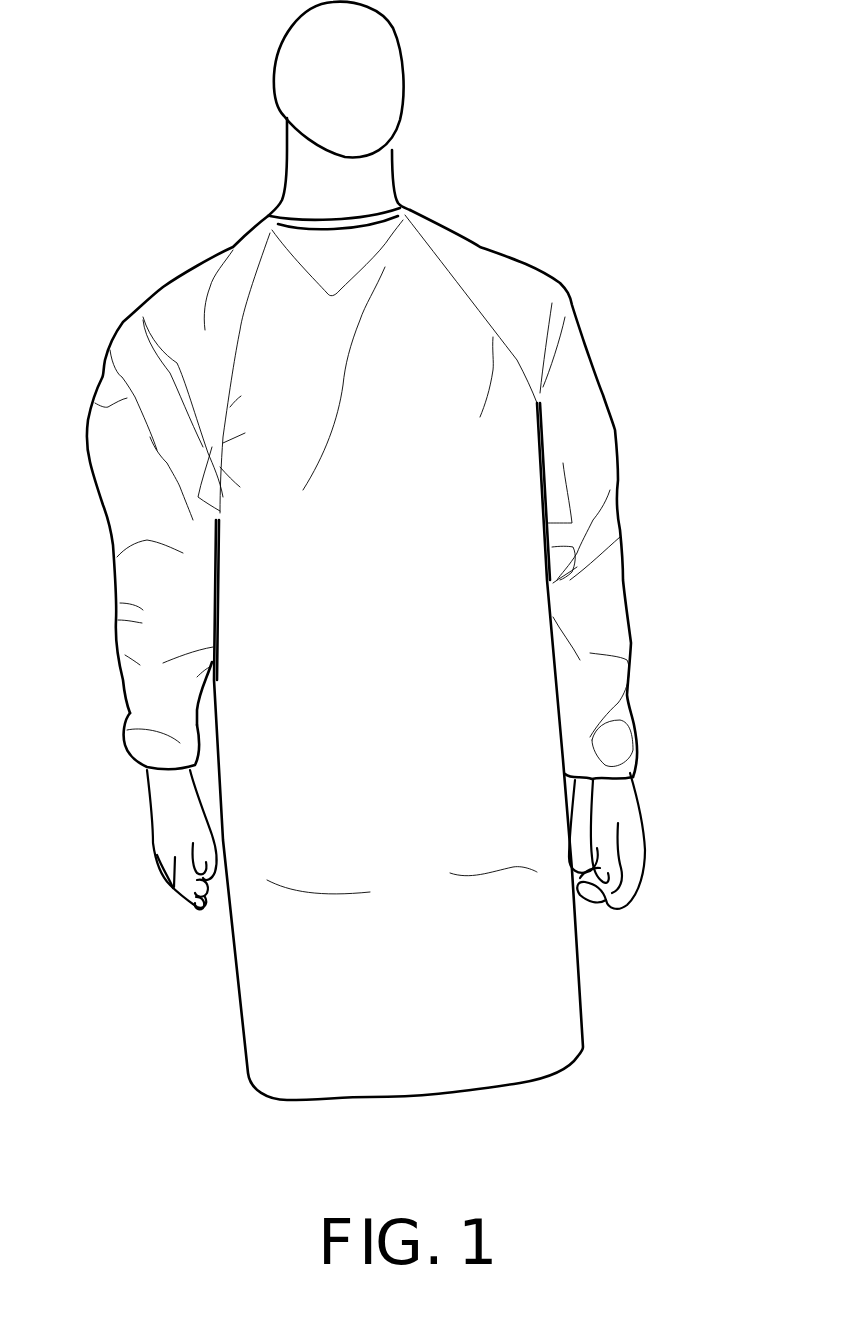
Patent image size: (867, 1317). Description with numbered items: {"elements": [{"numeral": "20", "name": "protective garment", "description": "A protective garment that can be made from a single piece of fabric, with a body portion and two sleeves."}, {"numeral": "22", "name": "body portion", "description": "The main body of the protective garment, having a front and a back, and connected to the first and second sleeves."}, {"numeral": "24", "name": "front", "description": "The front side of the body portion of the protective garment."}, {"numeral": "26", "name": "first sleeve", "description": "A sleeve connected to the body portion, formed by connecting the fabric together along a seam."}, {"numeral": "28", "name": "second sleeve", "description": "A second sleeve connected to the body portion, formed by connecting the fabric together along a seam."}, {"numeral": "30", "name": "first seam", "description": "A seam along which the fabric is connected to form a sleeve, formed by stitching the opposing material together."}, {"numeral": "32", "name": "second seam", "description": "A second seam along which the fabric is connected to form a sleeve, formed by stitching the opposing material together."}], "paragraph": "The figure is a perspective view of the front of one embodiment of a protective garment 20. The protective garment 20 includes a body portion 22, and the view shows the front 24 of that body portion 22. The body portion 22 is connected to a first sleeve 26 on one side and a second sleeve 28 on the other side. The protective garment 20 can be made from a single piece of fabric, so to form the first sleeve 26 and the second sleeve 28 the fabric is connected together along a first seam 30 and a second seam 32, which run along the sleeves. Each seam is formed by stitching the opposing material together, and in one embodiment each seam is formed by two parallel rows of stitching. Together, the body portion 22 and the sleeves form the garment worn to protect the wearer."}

The protective gown 20 is at (93, 84).
The gown body 22 is at (548, 942).
The front panel 24 is at (410, 685).
The first sleeve 26 is at (130, 508).
The second sleeve 28 is at (602, 453).
The first cuff 30 is at (200, 707).
The second cuff 32 is at (563, 693).